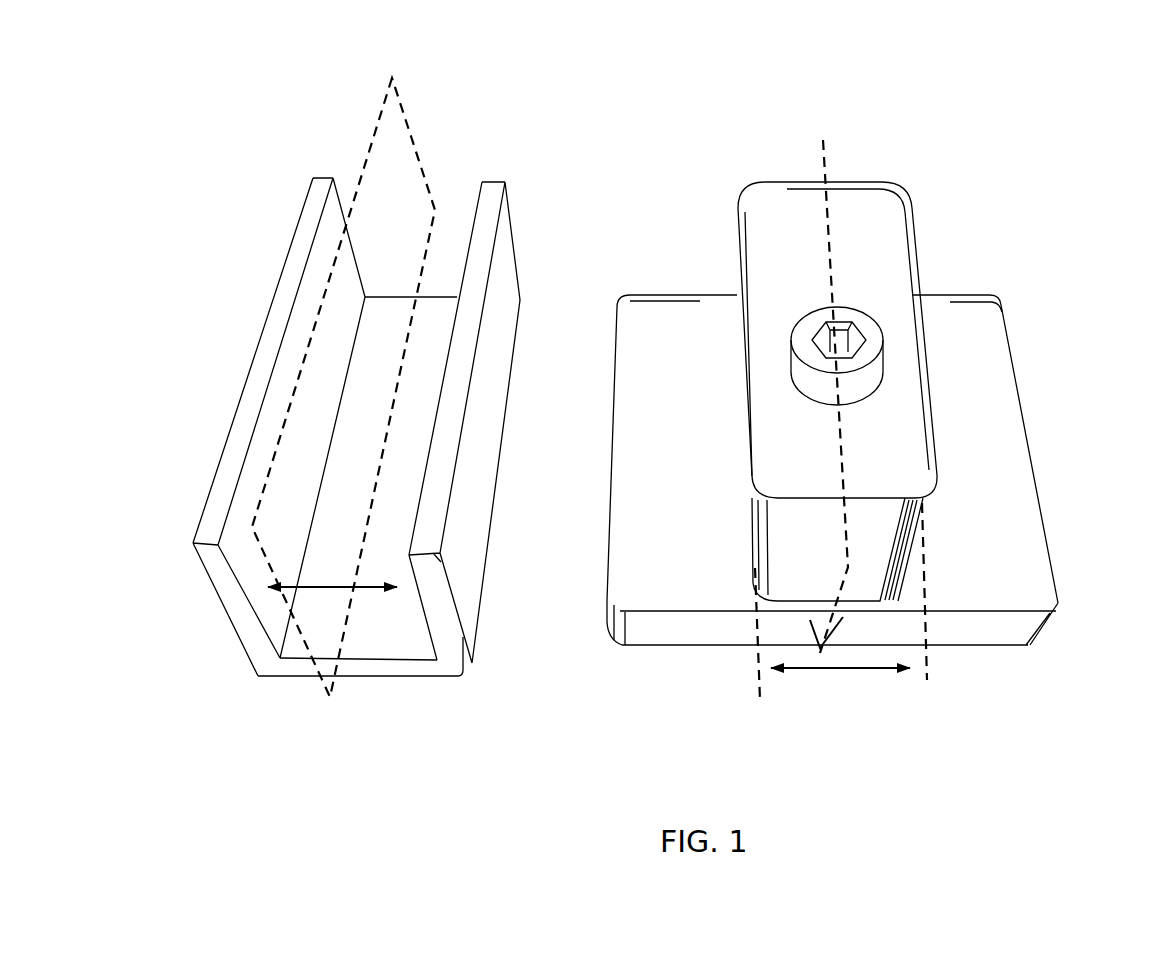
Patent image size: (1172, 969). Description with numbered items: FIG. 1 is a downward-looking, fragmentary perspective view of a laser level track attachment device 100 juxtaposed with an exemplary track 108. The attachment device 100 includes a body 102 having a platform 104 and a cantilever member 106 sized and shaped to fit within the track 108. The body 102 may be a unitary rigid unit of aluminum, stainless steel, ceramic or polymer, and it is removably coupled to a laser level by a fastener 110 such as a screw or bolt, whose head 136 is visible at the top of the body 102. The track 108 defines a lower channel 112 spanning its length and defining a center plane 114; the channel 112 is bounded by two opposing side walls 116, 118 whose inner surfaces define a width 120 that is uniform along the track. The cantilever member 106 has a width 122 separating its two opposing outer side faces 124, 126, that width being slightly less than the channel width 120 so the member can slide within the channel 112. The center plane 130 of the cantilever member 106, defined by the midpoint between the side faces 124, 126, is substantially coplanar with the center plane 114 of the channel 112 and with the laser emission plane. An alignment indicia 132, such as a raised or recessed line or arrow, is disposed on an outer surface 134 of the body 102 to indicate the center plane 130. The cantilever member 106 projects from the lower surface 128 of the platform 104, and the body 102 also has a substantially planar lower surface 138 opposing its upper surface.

The laser level track attachment device 100 is at (678, 265).
The body 102 is at (700, 637).
The platform 104 is at (1004, 481).
The cantilever member 106 is at (846, 230).
The track 108 is at (263, 665).
The fastener 110 is at (875, 335).
The lower channel 112 is at (338, 488).
The center plane 114 is at (410, 168).
The side wall 116 is at (460, 363).
The side wall 118 is at (313, 212).
The width 120 is at (277, 588).
The cantilever member width 122 is at (863, 672).
The outer side face 124 is at (940, 513).
The outer side face 126 is at (735, 450).
The lower surface 128 is at (663, 561).
The center plane 130 is at (823, 167).
The alignment indicia 132 is at (855, 633).
The outer surface 134 is at (638, 637).
The head 136 is at (873, 360).
The lower surface 138 is at (884, 241).